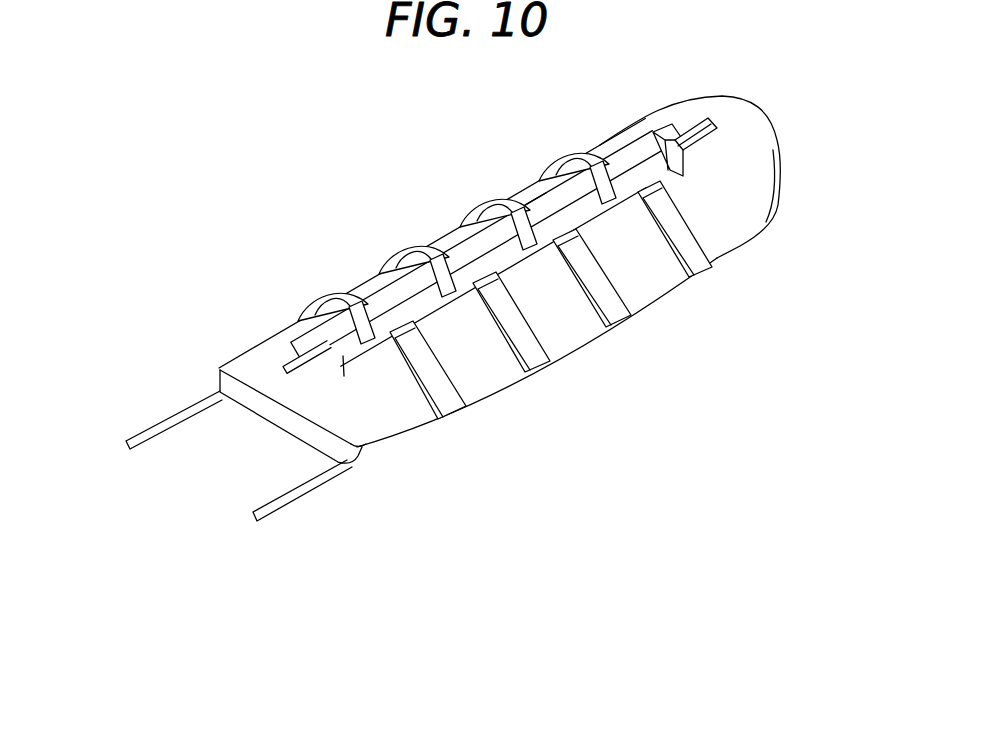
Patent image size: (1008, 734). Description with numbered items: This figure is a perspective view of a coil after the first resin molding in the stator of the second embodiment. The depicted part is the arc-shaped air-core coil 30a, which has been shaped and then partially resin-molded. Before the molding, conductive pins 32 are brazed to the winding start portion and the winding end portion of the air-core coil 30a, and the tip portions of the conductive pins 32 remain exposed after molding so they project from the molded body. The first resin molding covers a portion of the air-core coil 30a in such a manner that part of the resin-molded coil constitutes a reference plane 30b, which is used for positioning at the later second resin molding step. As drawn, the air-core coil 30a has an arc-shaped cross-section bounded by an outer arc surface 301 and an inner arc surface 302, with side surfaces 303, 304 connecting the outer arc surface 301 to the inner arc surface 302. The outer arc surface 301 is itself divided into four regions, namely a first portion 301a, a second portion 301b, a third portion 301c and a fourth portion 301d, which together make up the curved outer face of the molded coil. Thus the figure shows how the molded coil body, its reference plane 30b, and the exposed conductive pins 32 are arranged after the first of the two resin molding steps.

The outer arc surface 301 is at (750, 178).
The first portion 301a is at (548, 188).
The second portion 301b is at (648, 262).
The third portion 301c is at (732, 124).
The fourth portion 301d is at (260, 377).
The inner arc surface 302 is at (260, 417).
The side surface 303 is at (372, 281).
The side surface 304 is at (496, 384).
The air-core coil 30a is at (250, 360).
The reference plane 30b is at (420, 243).
The conductive pins 32 is at (145, 437).